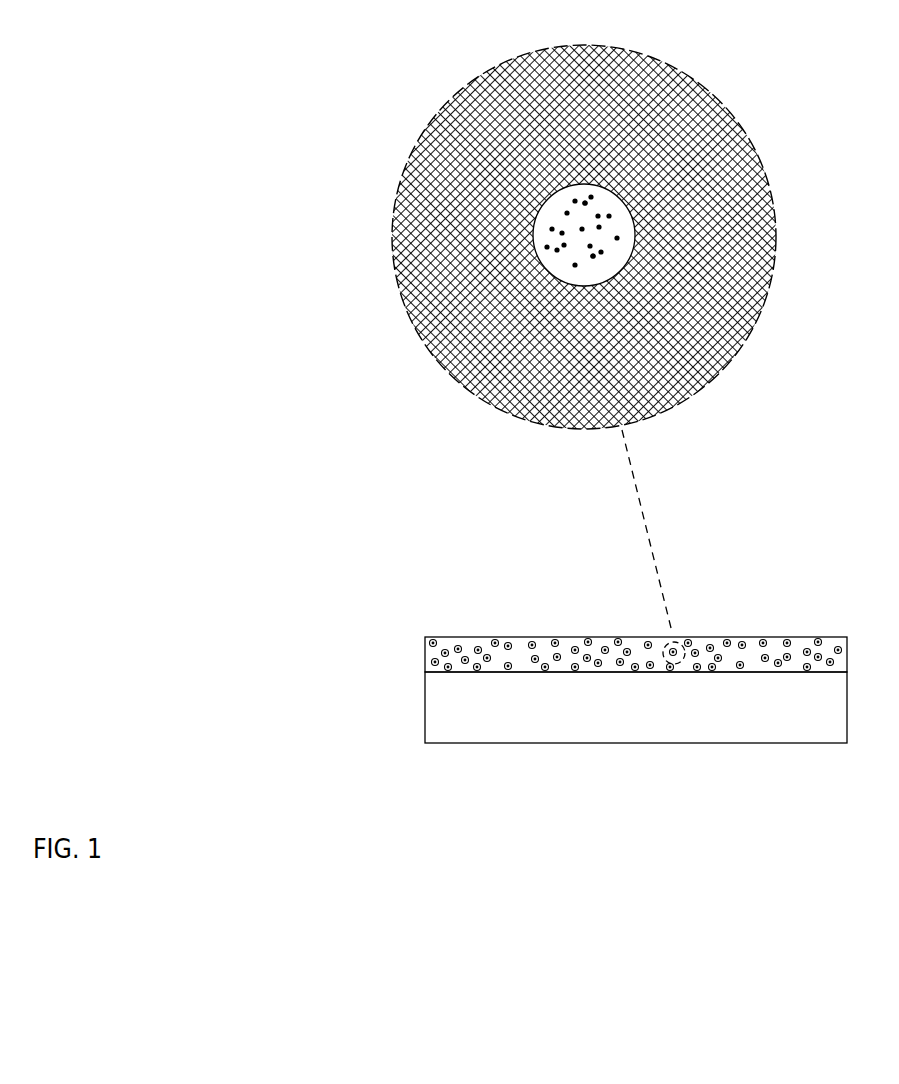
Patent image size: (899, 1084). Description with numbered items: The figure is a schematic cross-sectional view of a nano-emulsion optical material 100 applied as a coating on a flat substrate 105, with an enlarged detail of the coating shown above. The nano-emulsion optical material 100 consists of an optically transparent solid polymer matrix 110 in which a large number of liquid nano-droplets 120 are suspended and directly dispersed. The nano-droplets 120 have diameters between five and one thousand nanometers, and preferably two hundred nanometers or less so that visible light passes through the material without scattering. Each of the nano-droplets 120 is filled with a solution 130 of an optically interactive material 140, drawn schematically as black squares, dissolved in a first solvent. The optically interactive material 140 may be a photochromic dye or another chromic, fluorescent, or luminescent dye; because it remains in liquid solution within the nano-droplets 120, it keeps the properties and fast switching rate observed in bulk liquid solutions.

The nano-emulsion optical material 100 is at (425, 648).
The flat substrate 105 is at (425, 722).
The optically transparent solid polymer matrix 110 is at (462, 146).
The liquid nano-droplets 120 is at (622, 203).
The solution 130 is at (606, 203).
The optically interactive material 140 is at (593, 256).